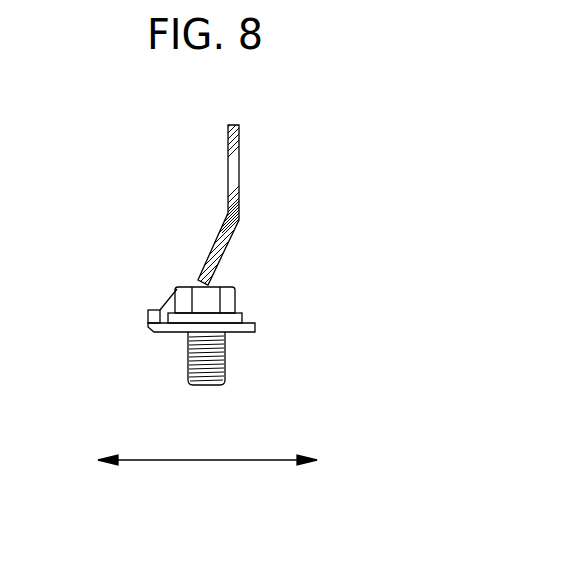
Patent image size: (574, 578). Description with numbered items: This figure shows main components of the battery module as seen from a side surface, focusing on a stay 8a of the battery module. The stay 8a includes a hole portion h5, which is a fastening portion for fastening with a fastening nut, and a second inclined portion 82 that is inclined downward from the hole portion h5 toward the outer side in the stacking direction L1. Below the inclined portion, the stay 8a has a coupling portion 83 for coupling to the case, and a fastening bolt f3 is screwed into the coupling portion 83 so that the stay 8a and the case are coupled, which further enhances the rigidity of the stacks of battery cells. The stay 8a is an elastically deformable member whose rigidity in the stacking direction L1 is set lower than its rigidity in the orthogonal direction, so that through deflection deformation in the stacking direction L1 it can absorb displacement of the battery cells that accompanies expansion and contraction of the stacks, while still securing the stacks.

The stay 8a is at (276, 141).
The hole portion h5 is at (229, 170).
The second inclined portion 82 is at (203, 252).
The fastening bolt f3 is at (227, 290).
The coupling portion 83 is at (232, 327).
The stacking direction L1 is at (215, 461).